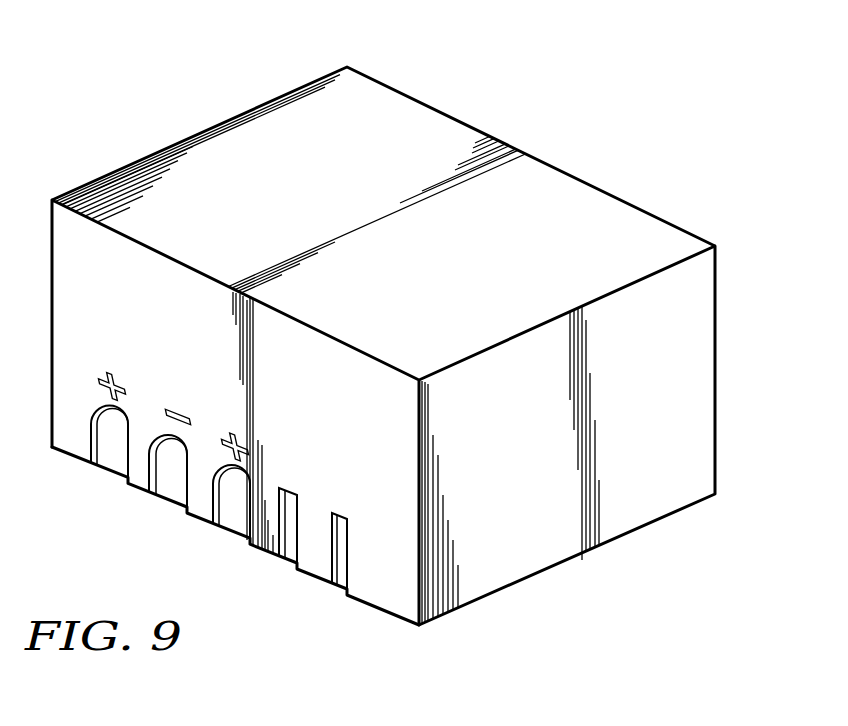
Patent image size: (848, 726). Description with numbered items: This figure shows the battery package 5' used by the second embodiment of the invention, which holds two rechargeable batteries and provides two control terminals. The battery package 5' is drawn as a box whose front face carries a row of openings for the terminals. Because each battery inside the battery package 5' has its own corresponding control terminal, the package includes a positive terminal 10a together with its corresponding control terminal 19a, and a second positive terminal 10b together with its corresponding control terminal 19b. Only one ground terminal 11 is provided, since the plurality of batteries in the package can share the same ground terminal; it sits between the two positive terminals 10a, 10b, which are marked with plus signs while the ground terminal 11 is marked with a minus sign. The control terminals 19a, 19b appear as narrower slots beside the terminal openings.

The battery package 5' is at (424, 346).
The positive terminal 10a is at (108, 470).
The ground terminal 11 is at (173, 492).
The second positive terminal 10b is at (238, 522).
The control terminal 19a is at (290, 555).
The control terminal 19b is at (340, 580).